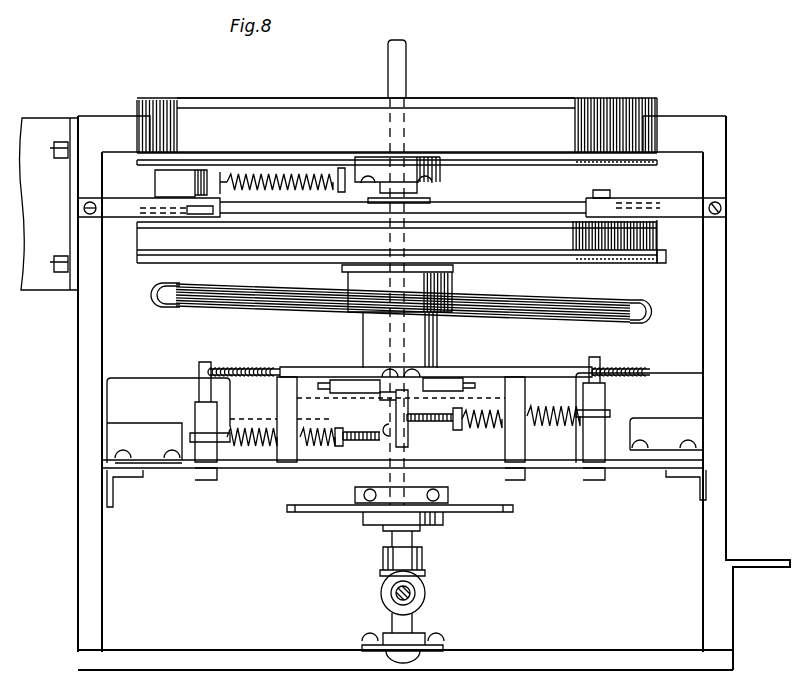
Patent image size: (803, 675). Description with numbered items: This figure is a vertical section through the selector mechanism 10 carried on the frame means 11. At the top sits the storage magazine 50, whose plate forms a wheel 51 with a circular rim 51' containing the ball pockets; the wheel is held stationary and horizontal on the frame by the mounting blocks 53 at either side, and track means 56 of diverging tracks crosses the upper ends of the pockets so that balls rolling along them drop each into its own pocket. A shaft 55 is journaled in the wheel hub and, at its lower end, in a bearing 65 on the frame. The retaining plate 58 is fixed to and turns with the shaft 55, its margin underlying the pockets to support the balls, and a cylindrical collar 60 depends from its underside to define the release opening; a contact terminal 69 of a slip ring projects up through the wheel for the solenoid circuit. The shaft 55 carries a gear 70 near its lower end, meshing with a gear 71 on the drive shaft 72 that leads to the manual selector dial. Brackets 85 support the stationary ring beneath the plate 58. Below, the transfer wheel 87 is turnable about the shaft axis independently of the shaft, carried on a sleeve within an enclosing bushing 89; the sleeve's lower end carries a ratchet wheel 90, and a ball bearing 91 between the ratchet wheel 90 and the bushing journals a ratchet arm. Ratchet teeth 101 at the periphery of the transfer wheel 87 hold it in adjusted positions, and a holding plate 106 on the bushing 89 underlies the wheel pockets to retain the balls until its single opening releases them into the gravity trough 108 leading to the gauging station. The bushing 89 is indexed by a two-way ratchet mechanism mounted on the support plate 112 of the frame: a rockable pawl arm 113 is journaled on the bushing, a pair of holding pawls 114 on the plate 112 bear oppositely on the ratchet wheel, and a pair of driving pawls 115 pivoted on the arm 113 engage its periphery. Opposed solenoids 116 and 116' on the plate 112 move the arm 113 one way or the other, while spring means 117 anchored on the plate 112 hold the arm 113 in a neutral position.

The selector mechanism 10 is at (179, 85).
The frame means 11 is at (80, 366).
The storage magazine 50 is at (395, 97).
The wheel 51 is at (310, 126).
The circular rim 51' is at (616, 108).
The mounting blocks 53 is at (112, 118).
The shaft 55 is at (406, 68).
The track means 56 is at (553, 98).
The retaining plate 58 is at (515, 165).
The cylindrical collar 60 is at (158, 186).
The bearing 65 is at (426, 636).
The contact terminal 69 is at (318, 170).
The gear 70 is at (424, 565).
The gear 71 is at (425, 590).
The drive shaft 72 is at (410, 596).
The brackets 85 is at (676, 200).
The transfer wheel 87 is at (660, 236).
The bushing 89 is at (562, 200).
The ratchet wheel 90 is at (332, 513).
The ball bearing 91 is at (451, 498).
The ratchet teeth 101 is at (661, 256).
The holding plate 106 is at (538, 263).
The gravity trough 108 is at (232, 306).
The support plate 112 is at (540, 470).
The rockable pawl arm 113 is at (400, 418).
The holding pawls 114 is at (318, 368).
The driving pawls 115 is at (343, 390).
The solenoid 116 is at (639, 408).
The solenoid 116' is at (168, 404).
The spring means 117 is at (258, 450).